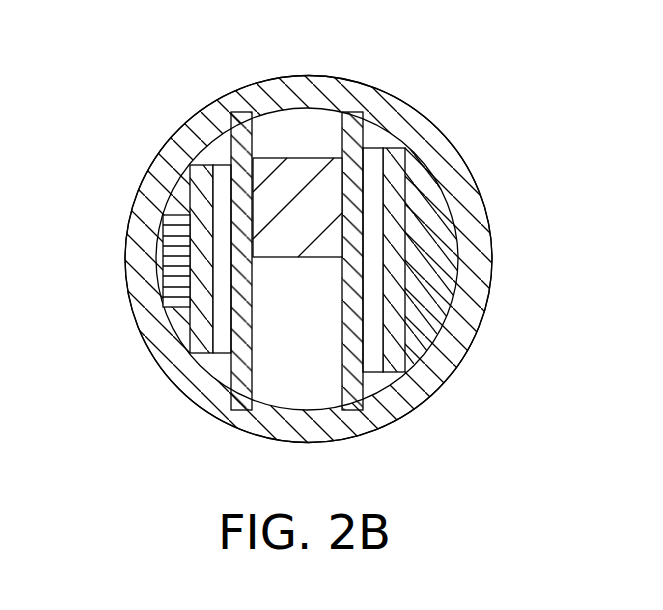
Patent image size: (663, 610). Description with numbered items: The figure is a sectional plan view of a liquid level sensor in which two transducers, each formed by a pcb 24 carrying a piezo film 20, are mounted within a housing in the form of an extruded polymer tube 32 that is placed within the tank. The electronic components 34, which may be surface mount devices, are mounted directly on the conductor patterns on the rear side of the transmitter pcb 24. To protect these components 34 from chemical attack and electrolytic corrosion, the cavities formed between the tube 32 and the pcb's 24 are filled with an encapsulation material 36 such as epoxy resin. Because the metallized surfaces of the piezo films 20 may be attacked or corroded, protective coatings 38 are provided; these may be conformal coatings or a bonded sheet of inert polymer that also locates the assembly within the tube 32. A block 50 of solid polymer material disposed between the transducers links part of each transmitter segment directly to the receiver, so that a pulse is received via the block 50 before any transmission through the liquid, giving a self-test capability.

The piezo film 20 is at (230, 162).
The pcb 24 is at (202, 205).
The extruded polymer tube 32 is at (143, 202).
The electronic components 34 is at (175, 256).
The encapsulation material 36 is at (457, 258).
The protective coating 38 is at (252, 373).
The block of solid material 50 is at (293, 172).